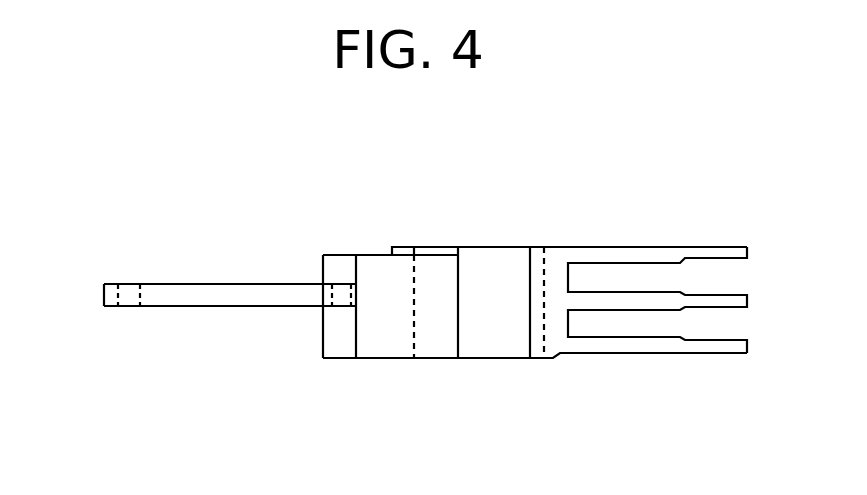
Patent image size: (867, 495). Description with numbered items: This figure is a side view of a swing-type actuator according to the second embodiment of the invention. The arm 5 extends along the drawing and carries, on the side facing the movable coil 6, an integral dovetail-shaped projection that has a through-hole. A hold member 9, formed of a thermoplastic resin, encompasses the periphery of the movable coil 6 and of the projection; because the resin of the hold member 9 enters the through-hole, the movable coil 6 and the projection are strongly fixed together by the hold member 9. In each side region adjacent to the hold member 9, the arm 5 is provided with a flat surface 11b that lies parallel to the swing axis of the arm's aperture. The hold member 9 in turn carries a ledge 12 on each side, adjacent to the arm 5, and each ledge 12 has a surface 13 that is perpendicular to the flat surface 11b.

The arm 5 is at (718, 255).
The movable coil 6 is at (132, 284).
The hold member 9 is at (108, 307).
The flat surface 11b is at (493, 265).
The ledge 12 is at (429, 342).
The surface 13 is at (458, 340).